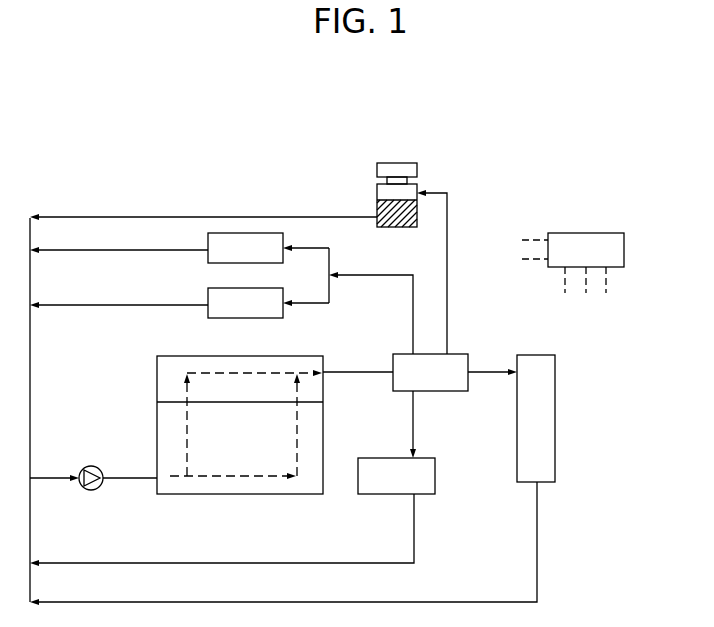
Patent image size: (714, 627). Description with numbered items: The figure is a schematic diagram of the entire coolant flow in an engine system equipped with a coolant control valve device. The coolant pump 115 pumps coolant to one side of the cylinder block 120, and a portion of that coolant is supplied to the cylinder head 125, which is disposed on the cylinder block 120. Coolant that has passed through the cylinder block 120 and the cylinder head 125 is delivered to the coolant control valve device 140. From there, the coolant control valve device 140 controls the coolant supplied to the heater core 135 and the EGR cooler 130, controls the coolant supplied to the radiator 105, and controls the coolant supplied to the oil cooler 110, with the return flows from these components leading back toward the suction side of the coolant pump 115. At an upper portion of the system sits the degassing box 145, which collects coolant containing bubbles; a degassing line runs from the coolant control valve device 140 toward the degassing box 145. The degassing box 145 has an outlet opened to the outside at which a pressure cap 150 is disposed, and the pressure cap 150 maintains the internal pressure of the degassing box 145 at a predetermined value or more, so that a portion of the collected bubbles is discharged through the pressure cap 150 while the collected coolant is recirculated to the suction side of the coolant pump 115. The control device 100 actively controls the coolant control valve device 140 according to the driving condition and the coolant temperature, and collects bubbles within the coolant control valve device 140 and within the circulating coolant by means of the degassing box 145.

The control device 100 is at (624, 241).
The radiator 105 is at (555, 391).
The oil cooler 110 is at (372, 494).
The coolant pump 115 is at (91, 466).
The cylinder block 120 is at (188, 494).
The cylinder head 125 is at (157, 376).
The exhaust-gas recirculation (EGR) cooler 130 is at (208, 314).
The heater core 135 is at (208, 259).
The coolant control valve device 140 is at (453, 391).
The degassing box 145 is at (377, 205).
The pressure cap 150 is at (406, 163).